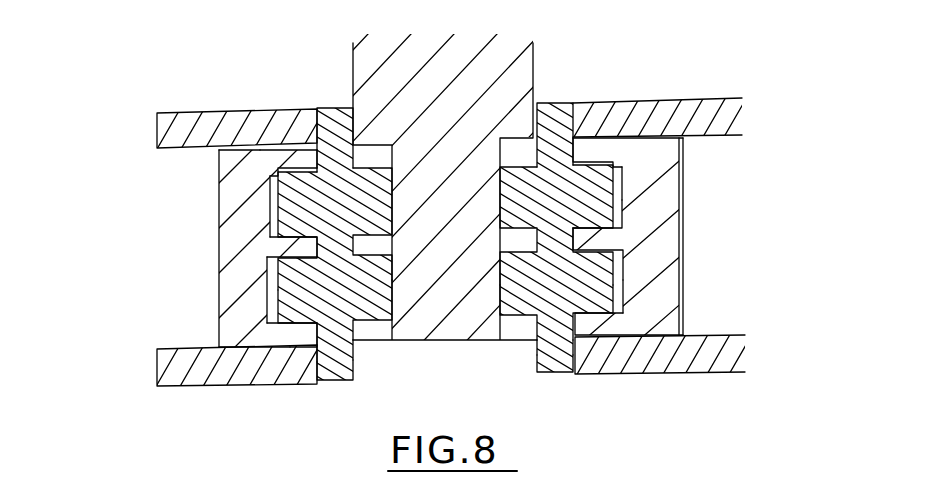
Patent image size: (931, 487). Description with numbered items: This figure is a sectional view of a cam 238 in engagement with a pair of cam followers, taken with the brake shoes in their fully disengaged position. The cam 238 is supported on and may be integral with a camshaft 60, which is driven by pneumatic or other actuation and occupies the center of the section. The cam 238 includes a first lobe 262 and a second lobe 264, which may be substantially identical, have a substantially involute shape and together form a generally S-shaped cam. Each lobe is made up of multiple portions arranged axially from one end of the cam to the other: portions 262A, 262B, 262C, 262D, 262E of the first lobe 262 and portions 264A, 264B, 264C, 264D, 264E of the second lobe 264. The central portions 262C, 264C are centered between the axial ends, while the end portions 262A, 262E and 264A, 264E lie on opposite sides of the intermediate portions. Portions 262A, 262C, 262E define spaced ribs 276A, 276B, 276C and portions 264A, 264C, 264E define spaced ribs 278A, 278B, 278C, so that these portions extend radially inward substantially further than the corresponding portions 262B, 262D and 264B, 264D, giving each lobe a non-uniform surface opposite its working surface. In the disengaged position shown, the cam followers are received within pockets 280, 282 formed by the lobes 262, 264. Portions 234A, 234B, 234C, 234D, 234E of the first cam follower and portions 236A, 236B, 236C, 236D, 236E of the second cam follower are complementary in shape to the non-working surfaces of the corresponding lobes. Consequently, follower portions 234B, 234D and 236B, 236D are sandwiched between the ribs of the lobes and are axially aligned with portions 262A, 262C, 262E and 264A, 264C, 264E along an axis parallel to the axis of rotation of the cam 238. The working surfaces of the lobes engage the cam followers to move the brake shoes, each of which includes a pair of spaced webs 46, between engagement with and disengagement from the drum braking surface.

The web 46 is at (203, 125).
The camshaft 60 is at (505, 48).
The portion of cam follower 234A is at (333, 378).
The portion of cam follower 234B is at (322, 355).
The portion of cam follower 234C is at (365, 338).
The portion of cam follower 234D is at (327, 190).
The portion of cam follower 234E is at (330, 118).
The portion of cam follower 236A is at (558, 330).
The portion of cam follower 236B is at (533, 317).
The portion of cam follower 236C is at (497, 322).
The portion of cam follower 236D is at (550, 170).
The portion of cam follower 236E is at (556, 128).
The cam 238 is at (180, 160).
The first lobe 262 is at (192, 185).
The portion of first lobe 262A is at (280, 326).
The portion of first lobe 262B is at (248, 268).
The portion of first lobe 262C is at (270, 246).
The portion of first lobe 262D is at (228, 200).
The portion of first lobe 262E is at (268, 160).
The second lobe 264 is at (682, 196).
The portion of second lobe 264A is at (608, 328).
The portion of second lobe 264B is at (643, 275).
The portion of second lobe 264C is at (610, 237).
The portion of second lobe 264D is at (643, 178).
The portion of second lobe 264E is at (613, 162).
The rib 276A is at (283, 338).
The rib 276B is at (275, 246).
The rib 276C is at (292, 153).
The rib 278A is at (618, 340).
The rib 278B is at (610, 215).
The rib 278C is at (630, 139).
The pocket 280 is at (272, 150).
The pocket 282 is at (700, 112).